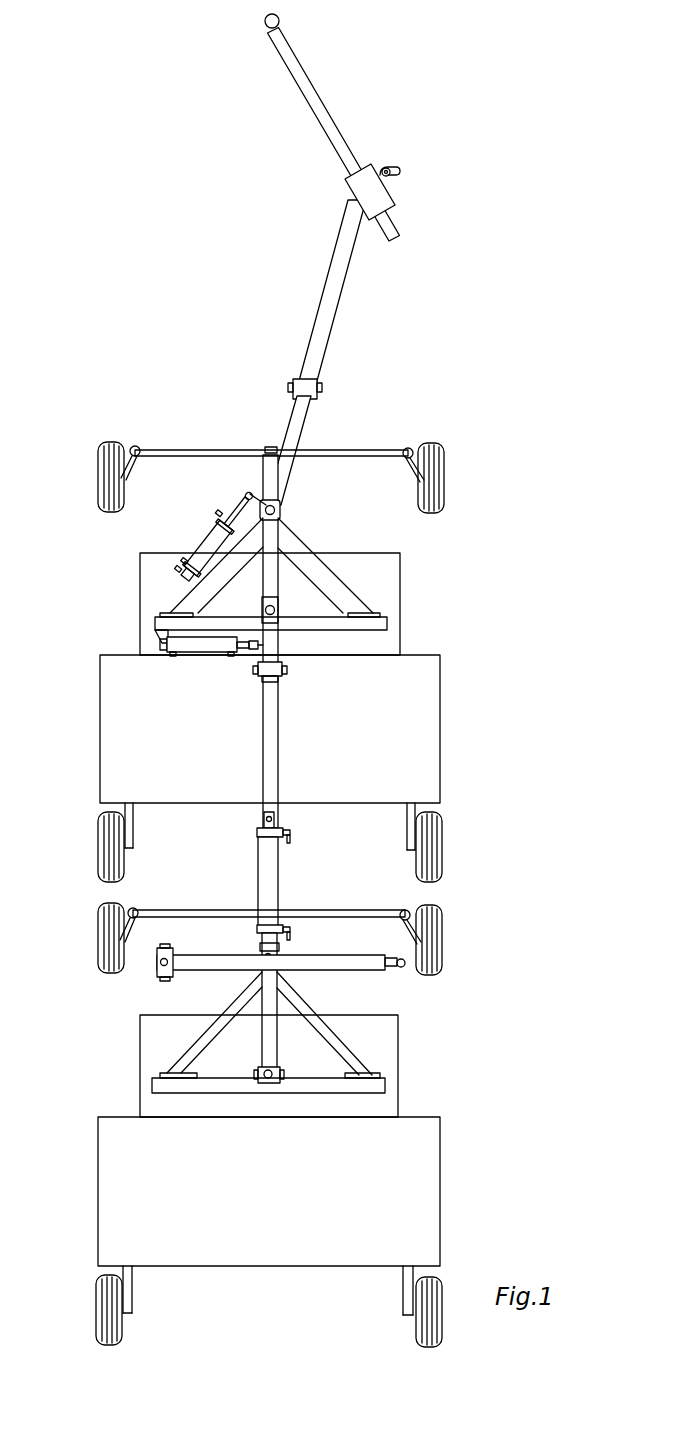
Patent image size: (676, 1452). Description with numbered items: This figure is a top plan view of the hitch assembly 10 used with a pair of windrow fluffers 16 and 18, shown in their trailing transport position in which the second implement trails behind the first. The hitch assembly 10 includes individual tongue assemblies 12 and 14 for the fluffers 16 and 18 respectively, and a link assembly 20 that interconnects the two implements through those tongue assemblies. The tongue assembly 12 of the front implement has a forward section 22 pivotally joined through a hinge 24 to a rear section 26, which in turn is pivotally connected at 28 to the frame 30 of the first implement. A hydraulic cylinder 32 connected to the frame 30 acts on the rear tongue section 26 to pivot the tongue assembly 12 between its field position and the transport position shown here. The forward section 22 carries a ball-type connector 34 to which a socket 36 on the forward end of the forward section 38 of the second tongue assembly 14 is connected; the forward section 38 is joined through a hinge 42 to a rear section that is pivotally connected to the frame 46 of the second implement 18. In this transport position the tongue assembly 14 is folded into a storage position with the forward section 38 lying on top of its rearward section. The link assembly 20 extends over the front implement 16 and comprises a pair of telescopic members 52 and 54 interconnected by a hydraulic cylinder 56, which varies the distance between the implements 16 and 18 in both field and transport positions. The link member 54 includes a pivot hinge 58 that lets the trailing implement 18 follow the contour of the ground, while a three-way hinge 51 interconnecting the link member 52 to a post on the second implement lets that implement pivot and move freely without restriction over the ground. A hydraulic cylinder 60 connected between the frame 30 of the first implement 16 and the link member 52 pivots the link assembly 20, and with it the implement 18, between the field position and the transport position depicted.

The hitch assembly 10 is at (350, 76).
The tongue assembly 12 is at (330, 273).
The tongue assembly 14 is at (350, 975).
The windrow fluffer 16 is at (100, 718).
The windrow fluffer 18 is at (100, 1175).
The link assembly 20 is at (282, 764).
The forward section 22 is at (325, 318).
The hinge 24 is at (292, 386).
The rear section 26 is at (294, 420).
The pivot connection 28 is at (280, 509).
The frame 30 is at (190, 604).
The hydraulic cylinder 32 is at (210, 537).
The ball-type connector 34 is at (390, 168).
The socket 36 is at (395, 945).
The forward section 38 is at (322, 955).
The hinge 42 is at (156, 962).
The frame 46 is at (348, 1053).
The three-way hinge 51 is at (271, 1084).
The telescopic member 52 is at (272, 738).
The telescopic member 54 is at (272, 985).
The hydraulic cylinder 56 is at (272, 858).
The pivot hinge 58 is at (285, 670).
The hydraulic cylinder 60 is at (200, 652).